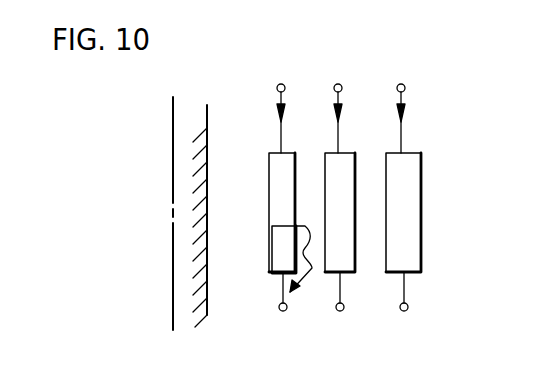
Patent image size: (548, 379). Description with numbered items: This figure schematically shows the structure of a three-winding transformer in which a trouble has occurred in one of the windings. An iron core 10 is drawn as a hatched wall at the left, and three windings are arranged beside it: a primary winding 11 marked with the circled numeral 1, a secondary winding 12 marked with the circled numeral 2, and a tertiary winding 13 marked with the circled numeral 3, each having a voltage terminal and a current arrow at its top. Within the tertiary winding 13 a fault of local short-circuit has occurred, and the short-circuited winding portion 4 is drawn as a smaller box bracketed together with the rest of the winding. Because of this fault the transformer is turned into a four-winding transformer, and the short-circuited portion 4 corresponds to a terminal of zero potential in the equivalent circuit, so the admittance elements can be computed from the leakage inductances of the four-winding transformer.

The primary winding 1 is at (403, 212).
The secondary winding 2 is at (340, 212).
The tertiary winding 3 is at (257, 212).
The short-circuited winding portion 4 is at (284, 249).
The iron core 10 is at (208, 295).
The primary winding 11 is at (429, 188).
The secondary winding 12 is at (353, 194).
The tertiary winding 13 is at (265, 199).